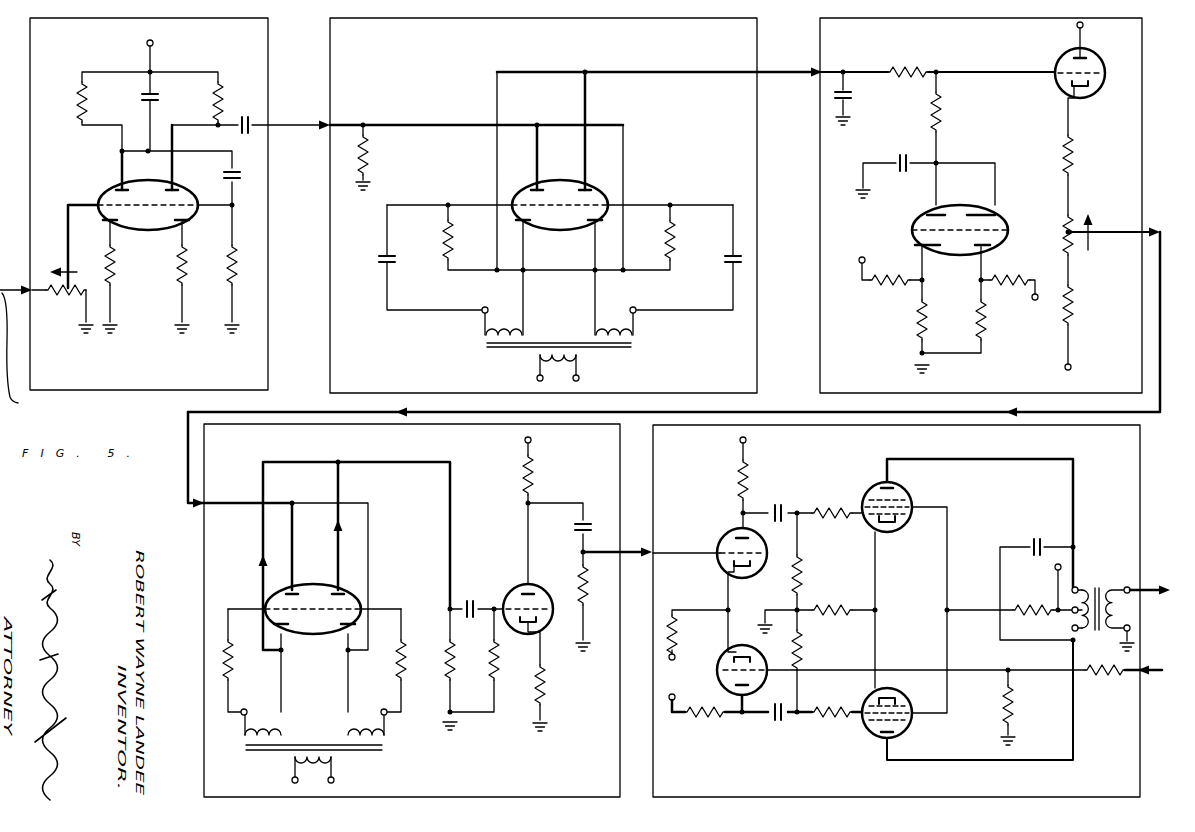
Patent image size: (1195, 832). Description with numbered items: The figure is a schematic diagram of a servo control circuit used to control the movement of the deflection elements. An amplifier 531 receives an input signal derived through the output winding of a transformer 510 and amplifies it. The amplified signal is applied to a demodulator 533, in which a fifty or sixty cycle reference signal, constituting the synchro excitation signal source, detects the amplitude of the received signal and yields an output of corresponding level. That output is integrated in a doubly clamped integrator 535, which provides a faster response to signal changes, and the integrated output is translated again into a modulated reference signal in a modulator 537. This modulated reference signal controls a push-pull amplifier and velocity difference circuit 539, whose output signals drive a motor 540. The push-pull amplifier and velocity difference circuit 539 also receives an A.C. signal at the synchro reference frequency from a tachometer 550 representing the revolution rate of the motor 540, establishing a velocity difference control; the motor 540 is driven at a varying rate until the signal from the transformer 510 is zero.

The transformer 510 is at (113, 350).
The amplifier 531 is at (262, 200).
The demodulator 533 is at (748, 173).
The doubly clamped integrator 535 is at (1140, 135).
The modulator 537 is at (618, 466).
The push-pull amplifier and velocity difference circuit 539 is at (1137, 525).
The motor 540 is at (1158, 588).
The tachometer 550 is at (1143, 660).